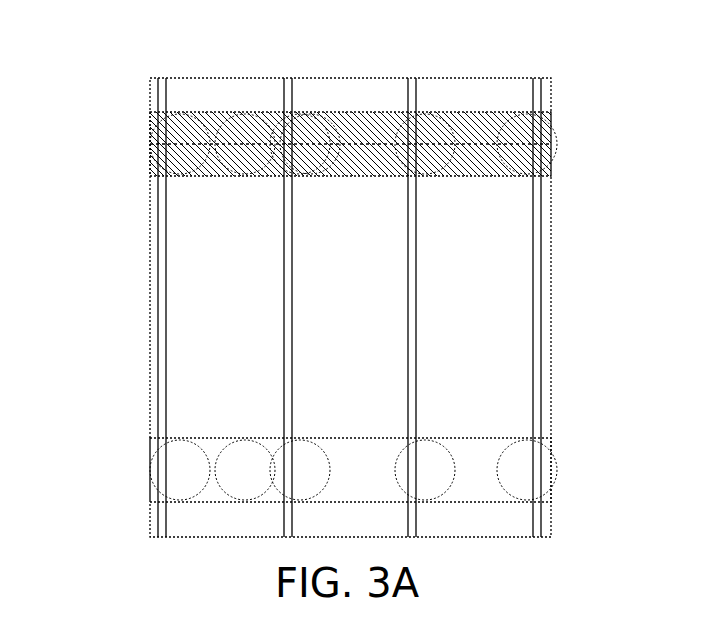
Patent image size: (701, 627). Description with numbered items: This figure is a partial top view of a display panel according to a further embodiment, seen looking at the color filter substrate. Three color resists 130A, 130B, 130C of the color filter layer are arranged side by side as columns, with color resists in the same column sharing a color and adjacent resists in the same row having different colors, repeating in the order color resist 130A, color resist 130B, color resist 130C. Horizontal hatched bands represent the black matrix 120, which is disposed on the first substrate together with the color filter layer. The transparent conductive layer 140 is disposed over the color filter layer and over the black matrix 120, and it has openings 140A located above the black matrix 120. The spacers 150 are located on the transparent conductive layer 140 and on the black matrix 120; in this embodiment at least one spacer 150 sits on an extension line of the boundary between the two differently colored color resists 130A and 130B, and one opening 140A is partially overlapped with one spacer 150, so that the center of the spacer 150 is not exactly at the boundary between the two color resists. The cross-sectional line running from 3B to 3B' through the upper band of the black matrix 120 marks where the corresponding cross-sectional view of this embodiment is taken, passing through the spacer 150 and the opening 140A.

The black matrix 120 is at (465, 112).
The transparent conductive layer 140 is at (538, 212).
The opening 140A is at (252, 118).
The spacer 150 is at (310, 112).
The cross-sectional line 3B-3B' 3B is at (175, 78).
The cross-sectional line 3B- 3B' is at (344, 94).
The color resist 130A is at (222, 314).
The color resist 130B is at (354, 258).
The color resist 130C is at (480, 314).